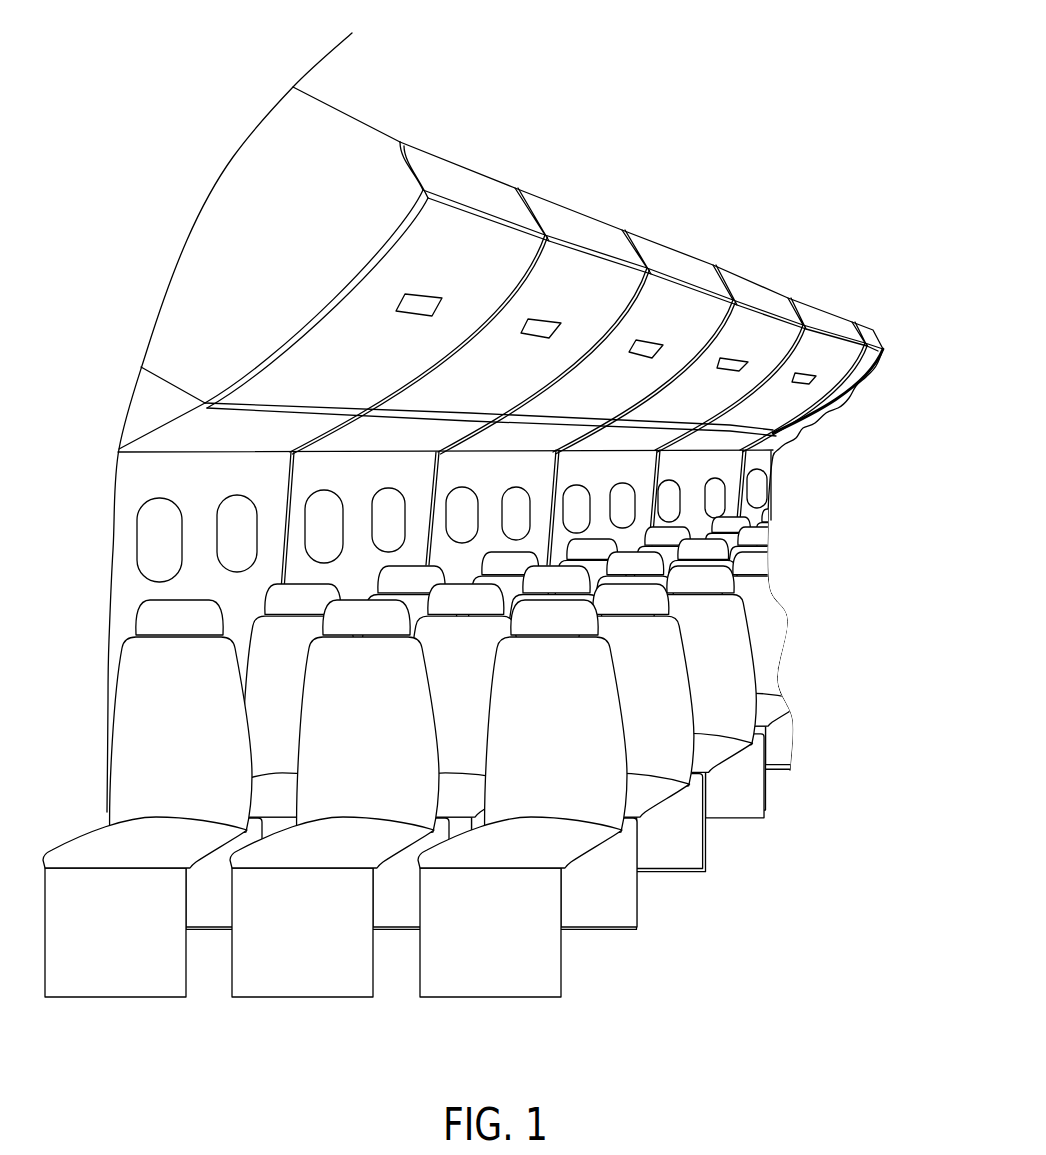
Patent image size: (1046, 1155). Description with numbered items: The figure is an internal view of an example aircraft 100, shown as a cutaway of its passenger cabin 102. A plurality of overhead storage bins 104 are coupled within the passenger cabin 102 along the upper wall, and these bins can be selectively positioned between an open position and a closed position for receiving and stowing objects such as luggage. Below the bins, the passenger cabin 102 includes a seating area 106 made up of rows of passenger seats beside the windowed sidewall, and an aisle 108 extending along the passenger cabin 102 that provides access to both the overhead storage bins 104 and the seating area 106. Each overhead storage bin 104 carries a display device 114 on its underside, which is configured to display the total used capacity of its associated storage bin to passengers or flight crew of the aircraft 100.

The aircraft 100 is at (141, 150).
The passenger cabin 102 is at (853, 482).
The overhead storage bins 104 is at (887, 305).
The seating area 106 is at (803, 564).
The aisle 108 is at (815, 779).
The display device 114 is at (426, 294).